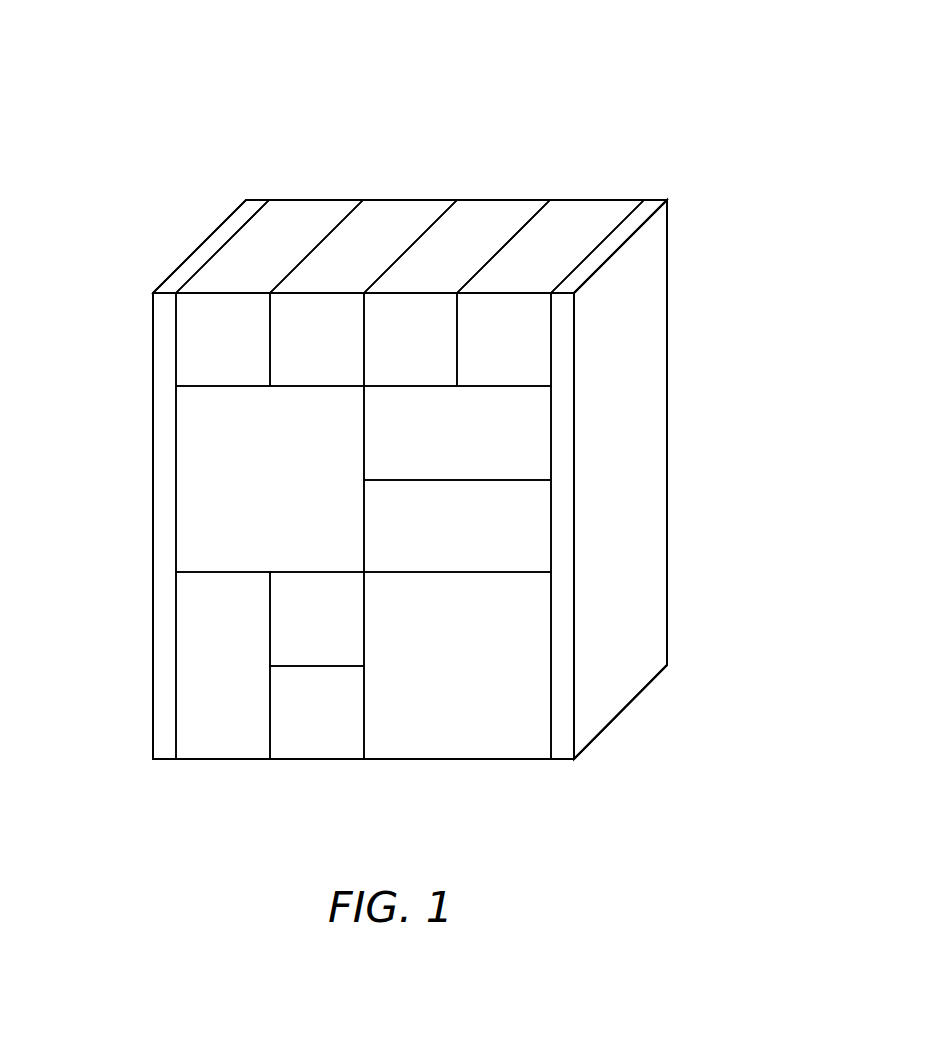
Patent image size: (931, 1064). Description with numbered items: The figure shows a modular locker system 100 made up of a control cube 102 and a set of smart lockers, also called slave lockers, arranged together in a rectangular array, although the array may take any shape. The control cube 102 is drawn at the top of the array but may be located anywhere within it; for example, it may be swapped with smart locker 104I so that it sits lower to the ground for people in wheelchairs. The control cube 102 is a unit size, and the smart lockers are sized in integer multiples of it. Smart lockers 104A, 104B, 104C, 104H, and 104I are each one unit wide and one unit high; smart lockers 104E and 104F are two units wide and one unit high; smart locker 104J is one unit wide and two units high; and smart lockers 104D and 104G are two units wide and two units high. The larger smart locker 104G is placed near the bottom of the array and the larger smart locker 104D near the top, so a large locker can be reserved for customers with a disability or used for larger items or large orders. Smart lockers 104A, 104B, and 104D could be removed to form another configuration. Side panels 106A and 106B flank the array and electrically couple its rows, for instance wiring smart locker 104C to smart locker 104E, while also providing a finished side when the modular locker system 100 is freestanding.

The modular locker system 100 is at (145, 56).
The control cube 102 is at (502, 208).
The smart locker 104A is at (283, 209).
The smart locker 104B is at (391, 209).
The smart locker 104C is at (612, 208).
The smart locker 104D is at (190, 558).
The smart locker 104E is at (538, 448).
The smart locker 104F is at (538, 540).
The smart locker 104G is at (538, 705).
The smart locker 104H is at (337, 740).
The smart locker 104I is at (299, 649).
The smart locker 104J is at (209, 740).
The side panel 106A is at (163, 446).
The side panel 106B is at (648, 504).